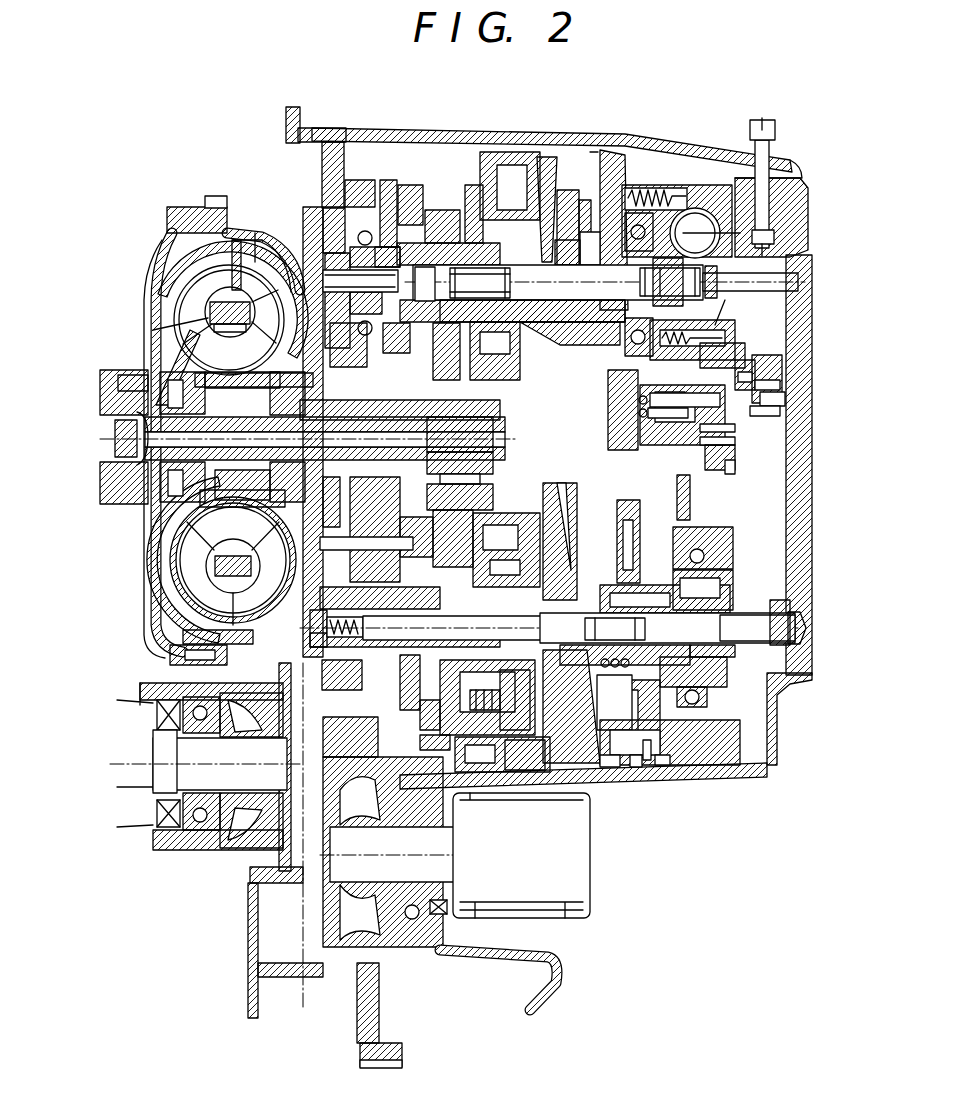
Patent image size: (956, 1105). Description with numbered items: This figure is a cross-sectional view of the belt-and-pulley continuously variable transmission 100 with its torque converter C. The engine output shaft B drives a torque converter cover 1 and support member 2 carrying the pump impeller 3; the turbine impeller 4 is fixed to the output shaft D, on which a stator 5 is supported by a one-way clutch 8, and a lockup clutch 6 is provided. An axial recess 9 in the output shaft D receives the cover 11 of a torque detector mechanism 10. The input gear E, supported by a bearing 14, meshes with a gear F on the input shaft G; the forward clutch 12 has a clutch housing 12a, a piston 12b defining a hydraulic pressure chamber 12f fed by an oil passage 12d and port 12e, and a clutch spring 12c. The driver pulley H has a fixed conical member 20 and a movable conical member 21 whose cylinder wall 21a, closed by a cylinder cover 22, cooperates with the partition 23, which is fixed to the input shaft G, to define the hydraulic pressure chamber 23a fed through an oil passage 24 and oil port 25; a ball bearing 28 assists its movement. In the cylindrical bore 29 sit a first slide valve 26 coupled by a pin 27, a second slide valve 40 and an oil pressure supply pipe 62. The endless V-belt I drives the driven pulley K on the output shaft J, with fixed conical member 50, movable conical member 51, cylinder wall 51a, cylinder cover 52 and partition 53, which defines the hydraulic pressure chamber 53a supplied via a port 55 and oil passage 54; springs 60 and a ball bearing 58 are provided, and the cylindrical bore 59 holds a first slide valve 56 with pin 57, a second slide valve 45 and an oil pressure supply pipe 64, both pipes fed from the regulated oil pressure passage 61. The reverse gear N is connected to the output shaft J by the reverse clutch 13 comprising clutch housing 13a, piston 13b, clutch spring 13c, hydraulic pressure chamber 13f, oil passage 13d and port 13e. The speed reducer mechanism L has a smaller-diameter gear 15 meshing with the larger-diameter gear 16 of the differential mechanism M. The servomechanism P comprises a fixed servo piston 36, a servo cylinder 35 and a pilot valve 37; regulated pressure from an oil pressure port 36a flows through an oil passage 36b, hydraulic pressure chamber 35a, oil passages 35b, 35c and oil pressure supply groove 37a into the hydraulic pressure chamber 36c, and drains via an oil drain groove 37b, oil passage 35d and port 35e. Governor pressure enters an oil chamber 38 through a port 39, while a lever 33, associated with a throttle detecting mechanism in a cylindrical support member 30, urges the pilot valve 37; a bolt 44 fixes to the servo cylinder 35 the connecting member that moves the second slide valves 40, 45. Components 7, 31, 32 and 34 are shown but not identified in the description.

The torque converter cover 1 is at (150, 580).
The support member 2 is at (275, 262).
The pump impeller 3 is at (280, 292).
The turbine impeller 4 is at (195, 290).
The stator 5 is at (255, 350).
The lockup clutch 6 is at (237, 240).
The strut 7 is at (160, 340).
The one-way clutch 8 is at (130, 392).
The axial recess 9 is at (494, 452).
The torque detector mechanism 10 is at (494, 497).
The cover 11 is at (494, 430).
The forward clutch 12 is at (405, 185).
The clutch housing 12a is at (383, 180).
The piston 12b is at (406, 180).
The clutch spring 12c is at (440, 240).
The oil passage 12d is at (315, 240).
The port 12e is at (325, 197).
The hydraulic pressure chamber 12f is at (362, 190).
The reverse clutch 13 is at (510, 770).
The clutch housing 13a is at (525, 528).
The piston 13b is at (560, 560).
The clutch spring 13c is at (475, 770).
The oil passage 13d is at (465, 705).
The port 13e is at (500, 625).
The hydraulic pressure chamber 13f is at (505, 705).
The bearing 14 is at (495, 362).
The smaller-diameter gear 15 is at (425, 710).
The larger-diameter gear 16 is at (360, 722).
The fixed conical member 20 is at (616, 150).
The movable conical member 21 is at (568, 150).
The cylinder wall 21a is at (512, 152).
The cylinder cover 22 is at (490, 158).
The partition 23 is at (548, 165).
The hydraulic pressure chamber 23a is at (552, 200).
The oil passage 24 is at (470, 195).
The oil port 25 is at (468, 270).
The slide valve 26 is at (558, 232).
The pin 27 is at (582, 215).
The ball bearing 28 is at (560, 340).
The cylindrical bore 29 is at (590, 302).
The cylindrical support member 30 is at (688, 208).
The bracket 31 is at (788, 210).
The bolt 32 is at (772, 160).
The lever 33 is at (780, 408).
The shift member 34 is at (778, 400).
The servo cylinder 35 is at (730, 452).
The hydraulic pressure chamber 35a is at (688, 460).
The oil passage 35b is at (732, 475).
The oil passage 35c is at (730, 442).
The oil passage 35d is at (742, 378).
The port 35e is at (760, 392).
The servo piston 36 is at (628, 455).
The oil pressure port 36a is at (650, 420).
The oil passage 36b is at (672, 445).
The hydraulic pressure chamber 36c is at (735, 427).
The pilot valve 37 is at (767, 378).
The oil pressure supply groove 37a is at (708, 350).
The oil drain groove 37b is at (765, 395).
The oil chamber 38 is at (638, 414).
The port 39 is at (638, 398).
The slide valve 40 is at (660, 295).
The bolt 44 is at (682, 335).
The slide valve 45 is at (722, 627).
The fixed conical member 50 is at (550, 745).
The movable conical member 51 is at (605, 770).
The cylinder wall 51a is at (660, 768).
The cylinder cover 52 is at (655, 775).
The partition 53 is at (655, 720).
The hydraulic pressure chamber 53a is at (646, 765).
The oil passage 54 is at (708, 695).
The port 55 is at (718, 676).
The slide valve 56 is at (614, 685).
The pin 57 is at (576, 705).
The ball bearing 58 is at (615, 652).
The cylindrical bore 59 is at (722, 655).
The springs 60 is at (738, 572).
The regulated oil pressure passage 61 is at (800, 300).
The oil pressure supply pipe 62 is at (712, 283).
The oil pressure supply pipe 64 is at (806, 618).
The transmission 100 is at (704, 808).
The engine output shaft B is at (120, 375).
The torque converter C is at (255, 230).
The output shaft D is at (120, 476).
The input gear E is at (480, 477).
The gear F is at (452, 210).
The input shaft G is at (425, 284).
The driver pulley H is at (594, 160).
The endless V-belt I is at (578, 270).
The output shaft J is at (355, 685).
The driven pulley K is at (626, 765).
The speed reducer mechanism L is at (408, 680).
The differential mechanism M is at (250, 865).
The reverse gear N is at (425, 742).
The servomechanism P is at (712, 327).